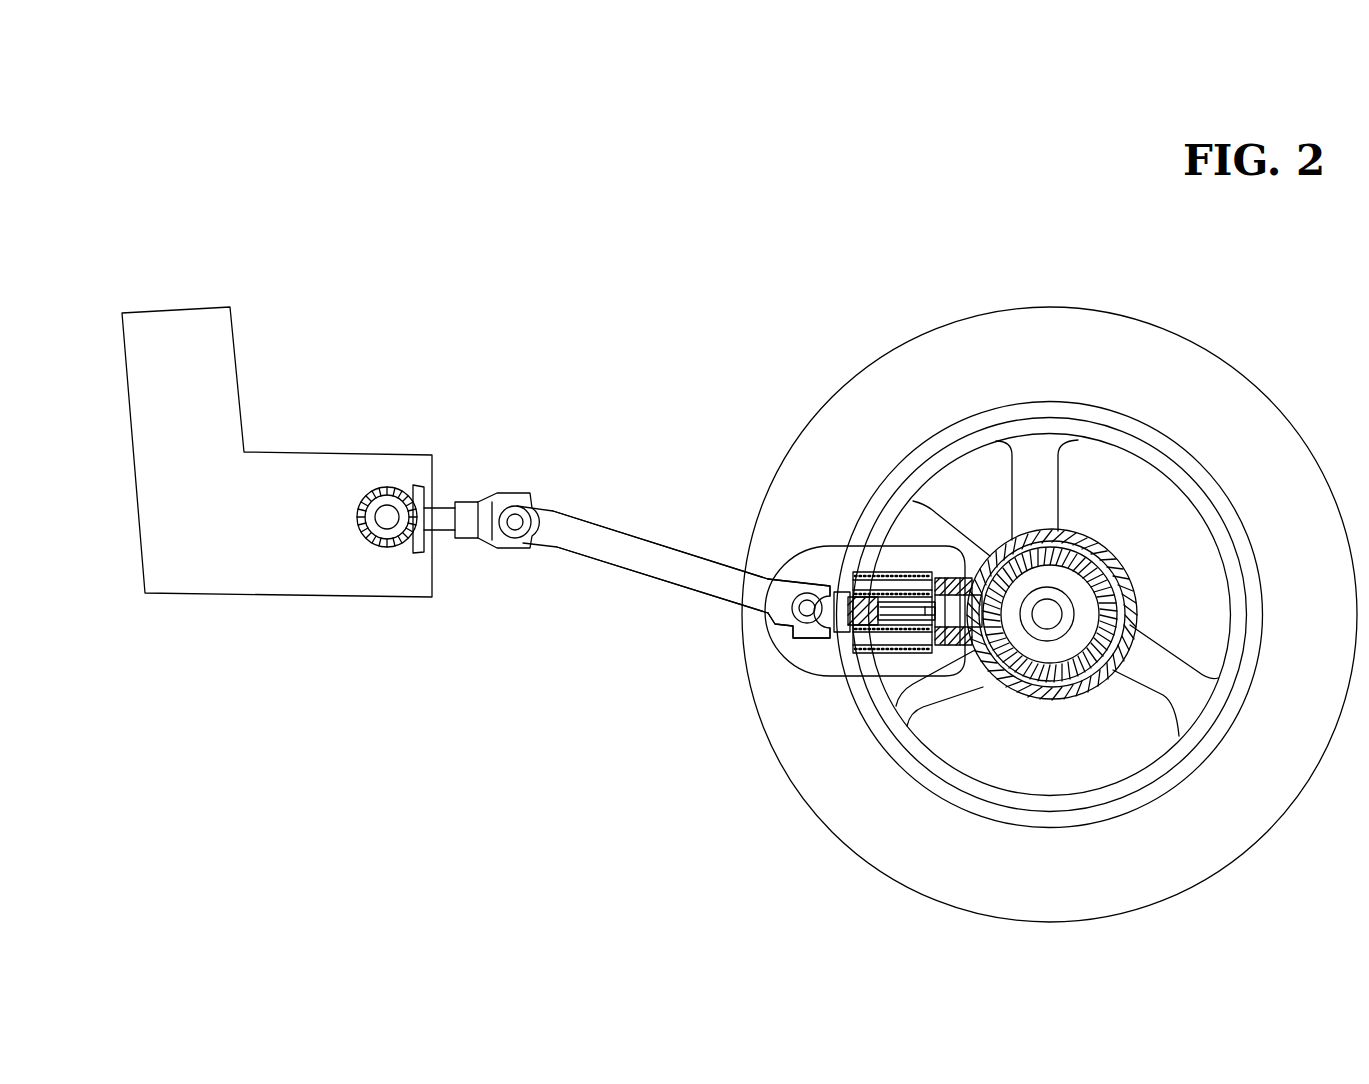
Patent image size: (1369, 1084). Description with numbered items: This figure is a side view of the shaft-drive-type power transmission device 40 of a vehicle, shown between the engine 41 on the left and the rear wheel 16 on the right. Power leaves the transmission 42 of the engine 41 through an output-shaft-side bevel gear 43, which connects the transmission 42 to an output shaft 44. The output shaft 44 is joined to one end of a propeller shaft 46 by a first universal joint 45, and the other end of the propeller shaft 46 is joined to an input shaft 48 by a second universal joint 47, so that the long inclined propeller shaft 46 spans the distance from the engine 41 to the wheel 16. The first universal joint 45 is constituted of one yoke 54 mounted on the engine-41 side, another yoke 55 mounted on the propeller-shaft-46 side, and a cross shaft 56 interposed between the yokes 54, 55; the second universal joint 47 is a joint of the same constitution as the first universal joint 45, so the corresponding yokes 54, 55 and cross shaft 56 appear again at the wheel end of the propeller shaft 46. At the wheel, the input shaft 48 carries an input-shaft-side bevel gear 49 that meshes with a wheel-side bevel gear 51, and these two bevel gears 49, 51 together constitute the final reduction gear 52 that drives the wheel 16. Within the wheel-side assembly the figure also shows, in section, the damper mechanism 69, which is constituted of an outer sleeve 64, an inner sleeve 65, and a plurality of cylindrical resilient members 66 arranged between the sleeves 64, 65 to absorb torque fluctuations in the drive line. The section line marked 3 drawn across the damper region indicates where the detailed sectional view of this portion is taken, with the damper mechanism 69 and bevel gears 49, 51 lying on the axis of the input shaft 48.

The section line III-III 3 is at (860, 550).
The rear wheel 16 is at (1070, 306).
The shaft-drive-type power transmission device 40 is at (281, 193).
The engine 41 is at (160, 310).
The transmission 42 is at (395, 465).
The output-shaft-side bevel gear 43 is at (446, 501).
The output shaft 44 is at (461, 486).
The first universal joint 45 is at (535, 477).
The propeller shaft 46 is at (622, 532).
The second universal joint 47 is at (791, 652).
The input shaft 48 is at (905, 673).
The input-shaft-side bevel gear 49 is at (1083, 535).
The wheel-side bevel gear 51 is at (1085, 533).
The final reduction gear 52 is at (1136, 531).
The yoke 54 is at (493, 538).
The yoke 55 is at (545, 535).
The cross shaft 56 is at (516, 528).
The outer sleeve 64 is at (901, 568).
The inner sleeve 65 is at (920, 570).
The cylindrical resilient members 66 is at (880, 573).
The damper mechanism 69 is at (872, 672).